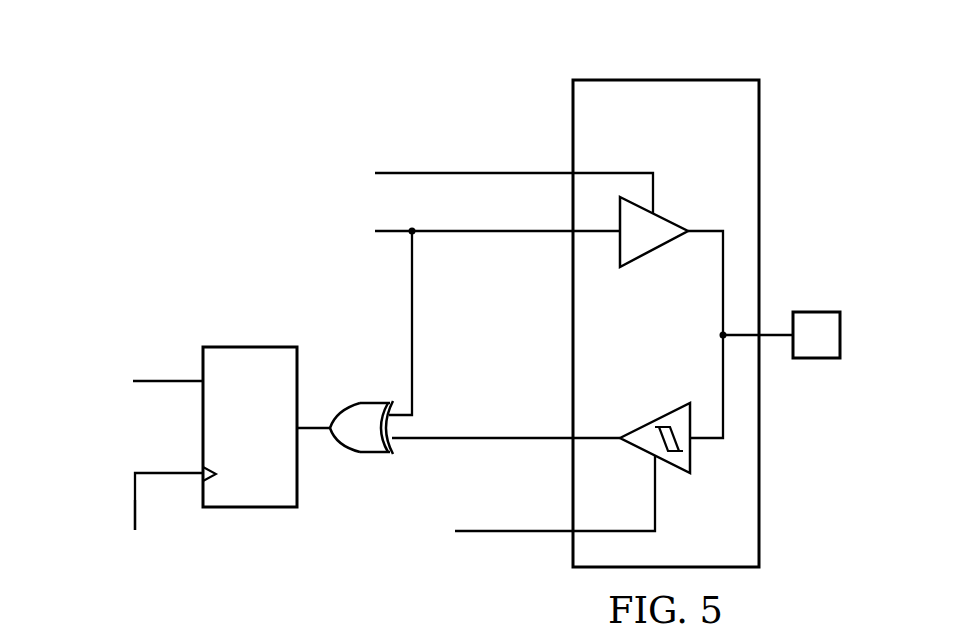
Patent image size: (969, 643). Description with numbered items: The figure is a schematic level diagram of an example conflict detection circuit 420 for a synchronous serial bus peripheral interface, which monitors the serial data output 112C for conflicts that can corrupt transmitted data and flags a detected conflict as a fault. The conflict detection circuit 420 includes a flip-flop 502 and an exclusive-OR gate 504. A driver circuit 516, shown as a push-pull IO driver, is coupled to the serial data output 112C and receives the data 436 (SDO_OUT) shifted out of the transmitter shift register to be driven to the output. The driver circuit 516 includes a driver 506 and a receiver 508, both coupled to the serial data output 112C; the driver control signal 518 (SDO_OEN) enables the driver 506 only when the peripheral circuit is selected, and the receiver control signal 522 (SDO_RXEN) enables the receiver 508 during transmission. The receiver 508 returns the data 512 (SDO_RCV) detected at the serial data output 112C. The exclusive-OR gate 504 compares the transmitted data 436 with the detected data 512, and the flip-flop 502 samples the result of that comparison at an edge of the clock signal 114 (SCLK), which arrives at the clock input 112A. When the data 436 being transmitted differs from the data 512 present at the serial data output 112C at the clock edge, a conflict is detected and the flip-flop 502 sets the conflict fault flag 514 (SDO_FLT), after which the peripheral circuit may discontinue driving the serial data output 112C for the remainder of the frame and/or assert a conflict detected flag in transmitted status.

The conflict detection circuit 420 is at (330, 105).
The flip-flop 502 is at (250, 509).
The exclusive-OR gate 504 is at (365, 402).
The driver 506 is at (672, 217).
The receiver 508 is at (653, 420).
The data detected at the serial data output 512 is at (490, 440).
The conflict fault flag 514 is at (170, 380).
The driver circuit 516 is at (678, 80).
The driver control signal 518 is at (492, 173).
The receiver control signal 522 is at (515, 532).
The data 436 is at (492, 232).
The clock signal 114 is at (170, 472).
The clock input 112A is at (134, 499).
The serial data output 112C is at (817, 312).